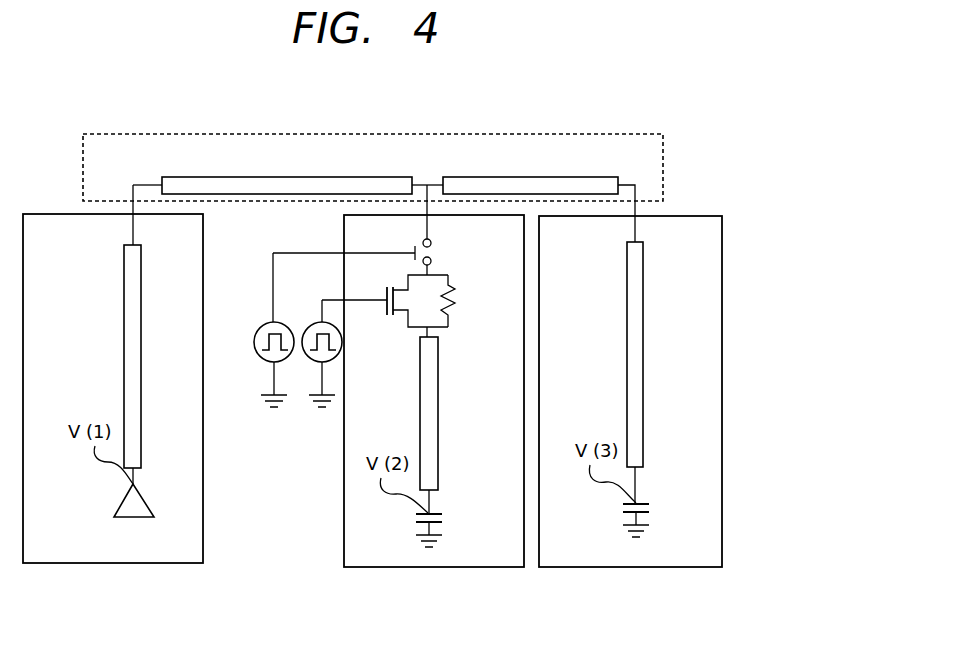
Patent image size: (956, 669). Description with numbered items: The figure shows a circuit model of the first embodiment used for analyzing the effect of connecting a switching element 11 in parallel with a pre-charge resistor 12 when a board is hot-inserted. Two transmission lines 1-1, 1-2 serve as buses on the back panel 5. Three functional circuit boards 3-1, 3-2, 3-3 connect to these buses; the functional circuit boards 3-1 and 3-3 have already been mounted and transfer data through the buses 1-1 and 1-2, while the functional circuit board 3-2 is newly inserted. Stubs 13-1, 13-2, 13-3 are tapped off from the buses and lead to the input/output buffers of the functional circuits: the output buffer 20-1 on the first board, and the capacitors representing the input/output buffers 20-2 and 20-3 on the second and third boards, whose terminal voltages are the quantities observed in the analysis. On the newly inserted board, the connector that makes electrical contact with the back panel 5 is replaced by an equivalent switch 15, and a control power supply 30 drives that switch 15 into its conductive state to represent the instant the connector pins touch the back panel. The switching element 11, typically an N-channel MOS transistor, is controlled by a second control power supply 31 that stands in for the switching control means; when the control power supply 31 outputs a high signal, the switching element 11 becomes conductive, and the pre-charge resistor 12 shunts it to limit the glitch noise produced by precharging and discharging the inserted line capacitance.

The back panel 5 is at (663, 183).
The transmission line 1-1 is at (270, 177).
The transmission line 1-2 is at (457, 177).
The functional circuit board 3-1 is at (110, 563).
The functional circuit board 3-2 is at (413, 567).
The functional circuit board 3-3 is at (607, 567).
The stub 13-1 is at (124, 320).
The stub 13-2 is at (438, 420).
The stub 13-3 is at (643, 328).
The output buffer 20-1 is at (118, 510).
The capacitor (input/output buffer) 20-2 is at (431, 513).
The capacitor (input/output buffer) 20-3 is at (638, 503).
The switching element 11 is at (388, 298).
The pre-charge resistor 12 is at (453, 300).
The switch 15 is at (432, 260).
The control power supply 30 is at (262, 326).
The control power supply 31 is at (311, 326).